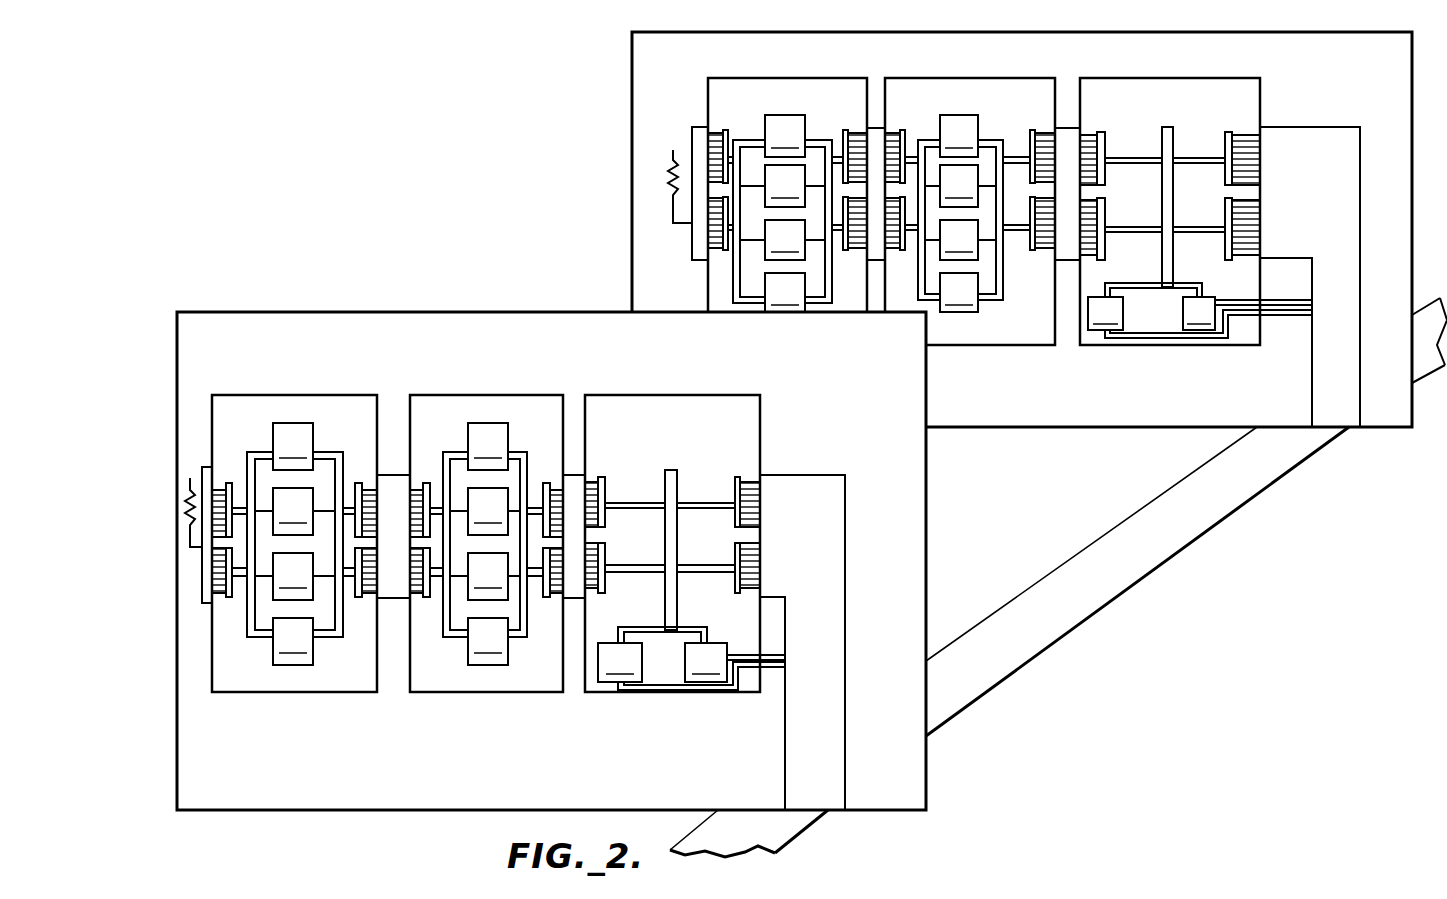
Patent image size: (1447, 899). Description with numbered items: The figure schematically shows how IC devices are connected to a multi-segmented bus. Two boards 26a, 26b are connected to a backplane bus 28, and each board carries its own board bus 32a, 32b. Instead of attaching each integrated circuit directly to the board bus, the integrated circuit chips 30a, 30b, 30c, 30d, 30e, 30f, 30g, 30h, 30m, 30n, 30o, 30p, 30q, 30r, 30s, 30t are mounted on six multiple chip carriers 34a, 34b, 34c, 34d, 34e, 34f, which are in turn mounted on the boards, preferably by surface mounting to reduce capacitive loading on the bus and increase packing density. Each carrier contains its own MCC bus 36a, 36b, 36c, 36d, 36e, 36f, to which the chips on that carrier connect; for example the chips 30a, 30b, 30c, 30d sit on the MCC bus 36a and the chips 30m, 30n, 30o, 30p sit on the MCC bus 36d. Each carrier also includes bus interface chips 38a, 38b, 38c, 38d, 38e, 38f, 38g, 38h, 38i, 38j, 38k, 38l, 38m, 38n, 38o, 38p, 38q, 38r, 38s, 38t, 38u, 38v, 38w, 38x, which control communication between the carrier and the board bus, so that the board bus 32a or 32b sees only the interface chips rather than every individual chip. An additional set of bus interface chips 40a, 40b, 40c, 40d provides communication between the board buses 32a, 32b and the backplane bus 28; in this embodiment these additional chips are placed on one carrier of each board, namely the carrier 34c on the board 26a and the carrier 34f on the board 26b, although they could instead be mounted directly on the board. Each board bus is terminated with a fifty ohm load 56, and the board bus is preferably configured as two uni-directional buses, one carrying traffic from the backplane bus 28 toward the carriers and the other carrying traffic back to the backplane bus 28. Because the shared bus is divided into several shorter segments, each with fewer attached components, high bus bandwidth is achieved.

The board 26a is at (483, 312).
The board 26b is at (958, 32).
The backplane bus 28 is at (790, 828).
The board bus 32a is at (392, 475).
The board bus 32b is at (883, 128).
The multiple chip carrier 34a is at (230, 692).
The multiple chip carrier 34b is at (434, 692).
The multiple chip carrier 34c is at (609, 692).
The multiple chip carrier 34d is at (780, 78).
The multiple chip carrier 34e is at (952, 78).
The multiple chip carrier 34f is at (1145, 78).
The MCC bus 36a is at (333, 637).
The MCC bus 36b is at (522, 637).
The MCC bus 36c is at (677, 612).
The MCC bus 36d is at (743, 140).
The MCC bus 36e is at (999, 140).
The MCC bus 36f is at (1167, 127).
The bus interface chip 38a is at (738, 477).
The bus interface chip 38b is at (601, 477).
The bus interface chip 38c is at (738, 593).
The bus interface chip 38d is at (601, 593).
The bus interface chip 38e is at (546, 483).
The bus interface chip 38f is at (546, 597).
The bus interface chip 38g is at (426, 483).
The bus interface chip 38h is at (426, 597).
The bus interface chip 38i is at (358, 483).
The bus interface chip 38j is at (358, 597).
The bus interface chip 38k is at (229, 483).
The bus interface chip 38l is at (229, 597).
The bus interface chip 38m is at (846, 130).
The bus interface chip 38n is at (845, 250).
The bus interface chip 38o is at (726, 130).
The bus interface chip 38p is at (725, 250).
The bus interface chip 38q is at (1033, 130).
The bus interface chip 38r is at (902, 130).
The bus interface chip 38s is at (1033, 260).
The bus interface chip 38t is at (903, 250).
The bus interface chip 38u is at (1228, 132).
The bus interface chip 38v is at (1101, 132).
The bus interface chip 38w is at (1232, 258).
The bus interface chip 38x is at (1105, 258).
The integrated circuit chip 30a is at (293, 446).
The integrated circuit chip 30b is at (293, 511).
The integrated circuit chip 30c is at (293, 576).
The integrated circuit chip 30d is at (293, 641).
The integrated circuit chip 30e is at (488, 446).
The integrated circuit chip 30f is at (488, 511).
The integrated circuit chip 30g is at (488, 576).
The integrated circuit chip 30h is at (488, 641).
The integrated circuit chip 30m is at (785, 136).
The integrated circuit chip 30n is at (785, 186).
The integrated circuit chip 30o is at (785, 240).
The integrated circuit chip 30p is at (785, 292).
The integrated circuit chip 30q is at (959, 136).
The integrated circuit chip 30r is at (959, 186).
The integrated circuit chip 30s is at (959, 240).
The integrated circuit chip 30t is at (959, 292).
The additional bus interface chip 40a is at (620, 662).
The additional bus interface chip 40b is at (706, 662).
The additional bus interface chip 40c is at (1105, 313).
The additional bus interface chip 40d is at (1199, 313).
The 50 ohm load 56 is at (186, 514).